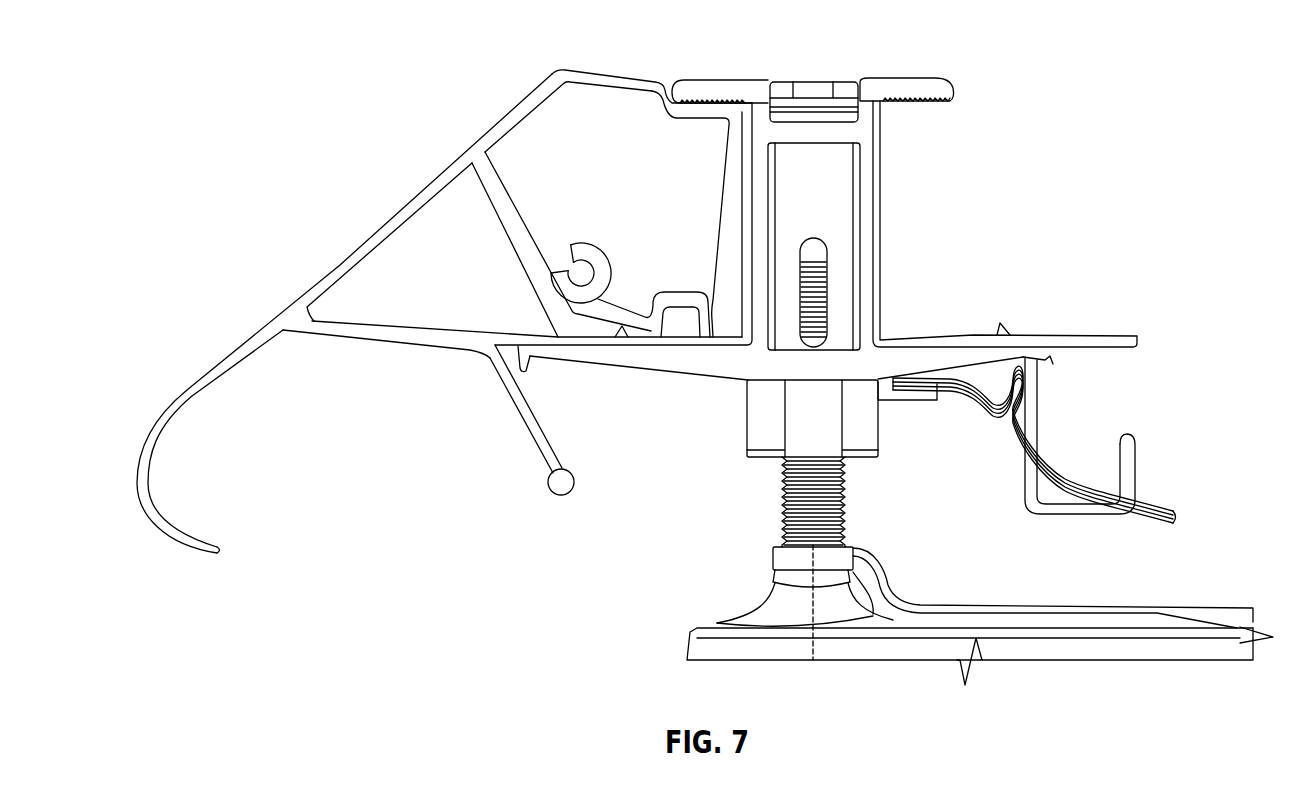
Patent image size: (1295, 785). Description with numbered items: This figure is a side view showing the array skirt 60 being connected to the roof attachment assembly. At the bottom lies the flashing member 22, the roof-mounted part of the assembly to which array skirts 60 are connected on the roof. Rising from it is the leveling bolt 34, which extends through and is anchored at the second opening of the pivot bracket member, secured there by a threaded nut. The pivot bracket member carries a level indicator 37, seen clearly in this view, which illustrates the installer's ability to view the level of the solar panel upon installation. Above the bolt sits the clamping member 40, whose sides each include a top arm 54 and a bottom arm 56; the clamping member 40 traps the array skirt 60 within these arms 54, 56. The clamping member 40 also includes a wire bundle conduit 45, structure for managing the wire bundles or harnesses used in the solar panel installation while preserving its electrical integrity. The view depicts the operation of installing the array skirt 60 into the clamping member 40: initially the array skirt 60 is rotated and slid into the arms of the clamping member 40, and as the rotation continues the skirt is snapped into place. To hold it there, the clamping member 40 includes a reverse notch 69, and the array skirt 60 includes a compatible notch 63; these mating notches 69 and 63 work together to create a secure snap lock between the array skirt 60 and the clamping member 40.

The flashing member 22 is at (1097, 653).
The leveling bolt 34 is at (847, 511).
The level indicator 37 is at (838, 221).
The clamping member 40 is at (1080, 166).
The wire bundle conduit 45 is at (1130, 447).
The top arm 54 is at (720, 84).
The bottom arm 56 is at (688, 357).
The array skirt 60 is at (505, 121).
The compatible notch 63 is at (498, 340).
The reverse notch 69 is at (527, 366).